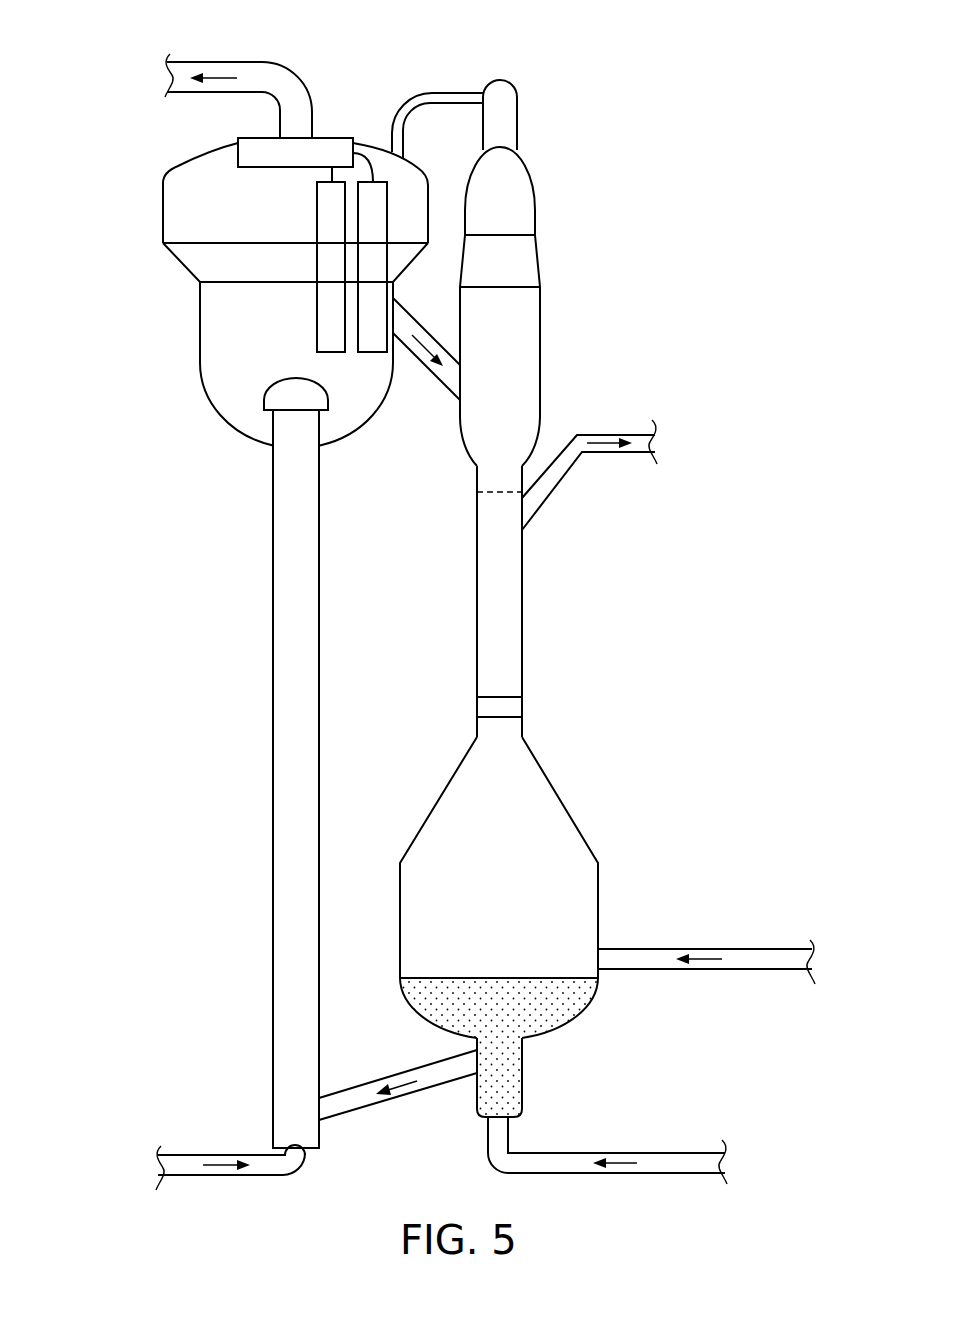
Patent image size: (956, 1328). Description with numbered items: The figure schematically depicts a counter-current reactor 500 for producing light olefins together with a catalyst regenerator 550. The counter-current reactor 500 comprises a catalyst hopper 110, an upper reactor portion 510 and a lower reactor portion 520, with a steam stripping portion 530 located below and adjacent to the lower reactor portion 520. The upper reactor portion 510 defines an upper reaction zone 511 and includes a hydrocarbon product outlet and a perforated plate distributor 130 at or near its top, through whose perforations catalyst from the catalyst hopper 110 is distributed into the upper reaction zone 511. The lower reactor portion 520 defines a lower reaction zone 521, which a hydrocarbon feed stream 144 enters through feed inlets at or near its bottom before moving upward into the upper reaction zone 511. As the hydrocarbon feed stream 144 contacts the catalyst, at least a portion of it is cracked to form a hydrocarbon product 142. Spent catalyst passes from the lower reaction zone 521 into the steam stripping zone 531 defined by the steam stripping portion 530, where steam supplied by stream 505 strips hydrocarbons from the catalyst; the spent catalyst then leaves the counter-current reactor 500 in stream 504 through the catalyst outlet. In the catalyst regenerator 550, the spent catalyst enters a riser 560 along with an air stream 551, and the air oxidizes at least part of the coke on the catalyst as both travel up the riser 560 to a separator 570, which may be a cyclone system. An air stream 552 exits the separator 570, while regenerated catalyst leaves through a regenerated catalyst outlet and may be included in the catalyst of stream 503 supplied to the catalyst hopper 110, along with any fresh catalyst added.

The counter-current reactor 500 is at (696, 90).
The catalyst regenerator 550 is at (146, 604).
The air stream 552 is at (213, 61).
The separator 570 is at (163, 212).
The stream 503 is at (430, 372).
The catalyst hopper 110 is at (540, 330).
The hydrocarbon product 142 is at (613, 435).
The perforated plate distributor 130 is at (477, 493).
The upper reaction zone 511 is at (484, 612).
The upper reactor portion 510 is at (522, 612).
The riser 560 is at (273, 774).
The lower reaction zone 521 is at (523, 877).
The lower reactor portion 520 is at (598, 912).
The steam stripping zone 531 is at (499, 993).
The steam stripping portion 530 is at (522, 1067).
The hydrocarbon feed stream 144 is at (705, 949).
The stream 504 is at (397, 1077).
The stream 505 is at (616, 1152).
The air stream 551 is at (220, 1155).